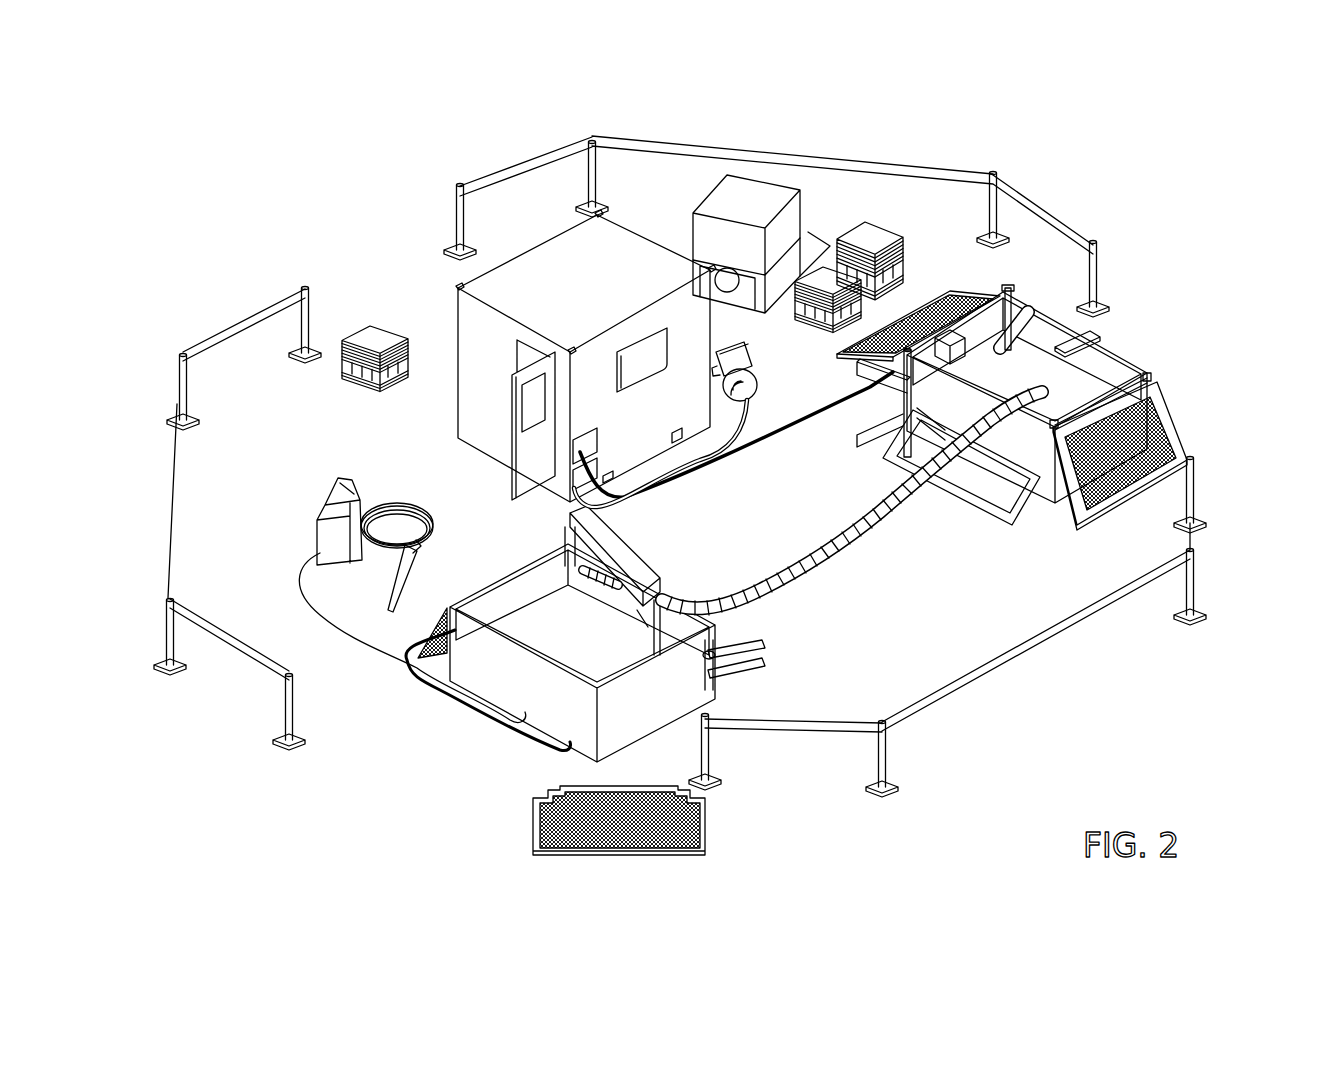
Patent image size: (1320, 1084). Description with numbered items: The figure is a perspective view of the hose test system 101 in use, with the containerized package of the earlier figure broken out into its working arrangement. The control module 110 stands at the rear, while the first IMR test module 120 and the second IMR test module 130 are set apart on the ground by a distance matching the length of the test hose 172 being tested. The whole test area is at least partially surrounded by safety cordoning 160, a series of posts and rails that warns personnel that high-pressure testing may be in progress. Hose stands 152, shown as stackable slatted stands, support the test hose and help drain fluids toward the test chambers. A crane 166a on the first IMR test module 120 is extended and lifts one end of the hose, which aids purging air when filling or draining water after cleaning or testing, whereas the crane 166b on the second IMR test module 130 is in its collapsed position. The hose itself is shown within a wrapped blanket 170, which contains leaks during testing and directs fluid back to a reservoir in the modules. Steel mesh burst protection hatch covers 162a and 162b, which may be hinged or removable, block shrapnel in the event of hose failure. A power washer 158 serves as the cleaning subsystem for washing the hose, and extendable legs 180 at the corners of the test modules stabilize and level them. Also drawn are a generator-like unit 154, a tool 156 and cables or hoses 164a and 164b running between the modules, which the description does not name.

The hose test system in use 101 is at (932, 135).
The control module 110 is at (565, 245).
The first IMR test module 120 is at (545, 728).
The second IMR test module 130 is at (1097, 354).
The hose stands 152 is at (857, 237).
The generator 154 is at (766, 191).
The power tool 156 is at (756, 393).
The power washer 158 is at (334, 520).
The safety cordoning 160 is at (1003, 666).
The burst protection hatch cover 162a is at (543, 830).
The burst protection hatch cover 162b is at (1170, 423).
The hose 164a is at (443, 700).
The cables 164b is at (697, 470).
The crane 166a is at (627, 553).
The crane 166b is at (975, 363).
The blanket 170 is at (818, 551).
The test hose 172 is at (1043, 383).
The extendable legs 180 is at (868, 448).